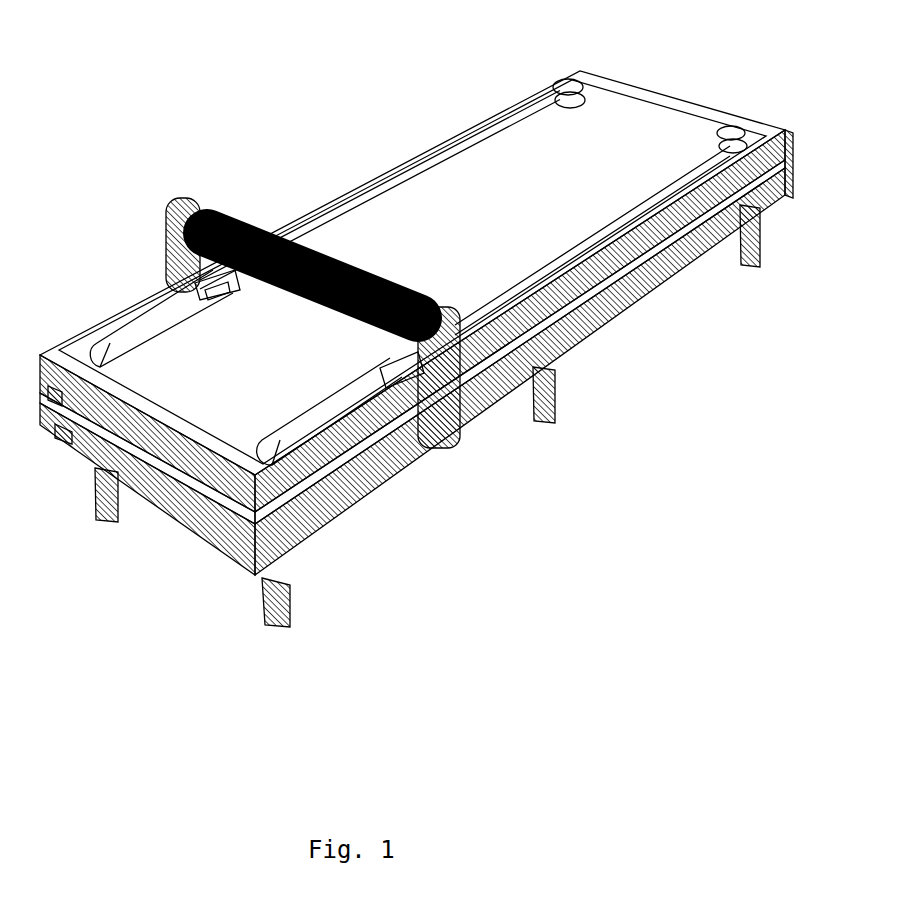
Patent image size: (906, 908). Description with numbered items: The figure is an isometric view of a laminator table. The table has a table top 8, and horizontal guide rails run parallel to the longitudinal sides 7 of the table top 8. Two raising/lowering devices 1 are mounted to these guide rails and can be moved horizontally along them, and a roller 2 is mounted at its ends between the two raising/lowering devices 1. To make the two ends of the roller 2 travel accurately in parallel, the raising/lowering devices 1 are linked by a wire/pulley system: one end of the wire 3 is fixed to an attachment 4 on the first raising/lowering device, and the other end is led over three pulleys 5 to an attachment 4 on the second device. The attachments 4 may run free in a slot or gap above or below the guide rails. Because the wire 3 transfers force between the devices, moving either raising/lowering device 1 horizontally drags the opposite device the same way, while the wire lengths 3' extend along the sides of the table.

The raising/lowering device 1 is at (165, 232).
The roller 2 is at (217, 217).
The wire 3 is at (410, 276).
The frame beam 3' is at (412, 319).
The attachment 4 is at (218, 293).
The pulley 5 is at (733, 126).
The longitudinal side 7 is at (520, 93).
The table top 8 is at (607, 157).